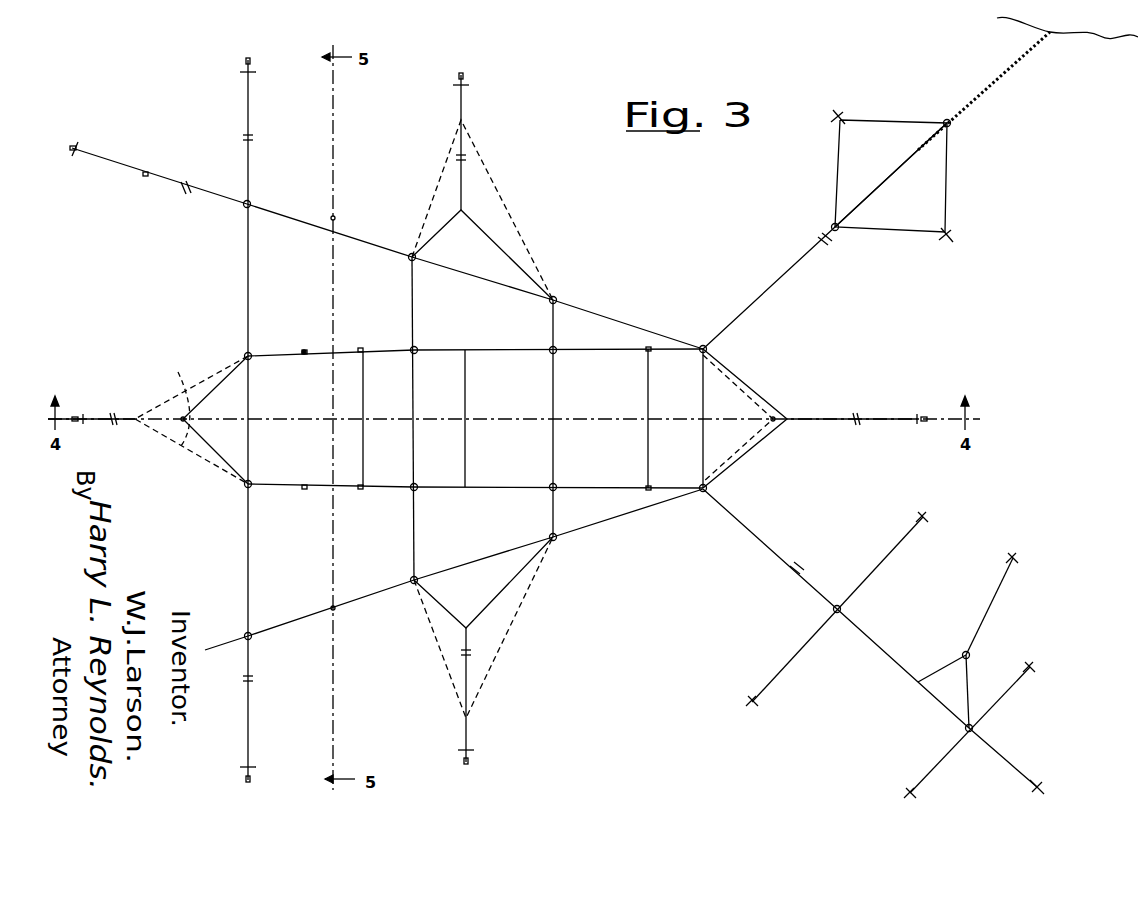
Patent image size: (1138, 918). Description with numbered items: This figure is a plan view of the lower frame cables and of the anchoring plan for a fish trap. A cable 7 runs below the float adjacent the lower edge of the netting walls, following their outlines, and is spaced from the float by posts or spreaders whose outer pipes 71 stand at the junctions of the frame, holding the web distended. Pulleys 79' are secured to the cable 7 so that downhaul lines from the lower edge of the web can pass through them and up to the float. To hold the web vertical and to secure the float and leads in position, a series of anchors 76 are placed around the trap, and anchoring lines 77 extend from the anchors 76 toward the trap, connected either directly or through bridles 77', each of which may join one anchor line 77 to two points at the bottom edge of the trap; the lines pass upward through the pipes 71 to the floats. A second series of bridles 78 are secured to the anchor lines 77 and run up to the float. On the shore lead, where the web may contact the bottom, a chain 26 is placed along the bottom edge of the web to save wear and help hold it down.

The cable 7 is at (247, 322).
The chain 26 is at (987, 90).
The outer pipe of spreader 71 is at (249, 358).
The anchor 76 is at (80, 145).
The anchoring line 77 is at (541, 428).
The bridle 77' is at (690, 419).
The second bridle 78 is at (440, 167).
The pulley 79' is at (285, 318).